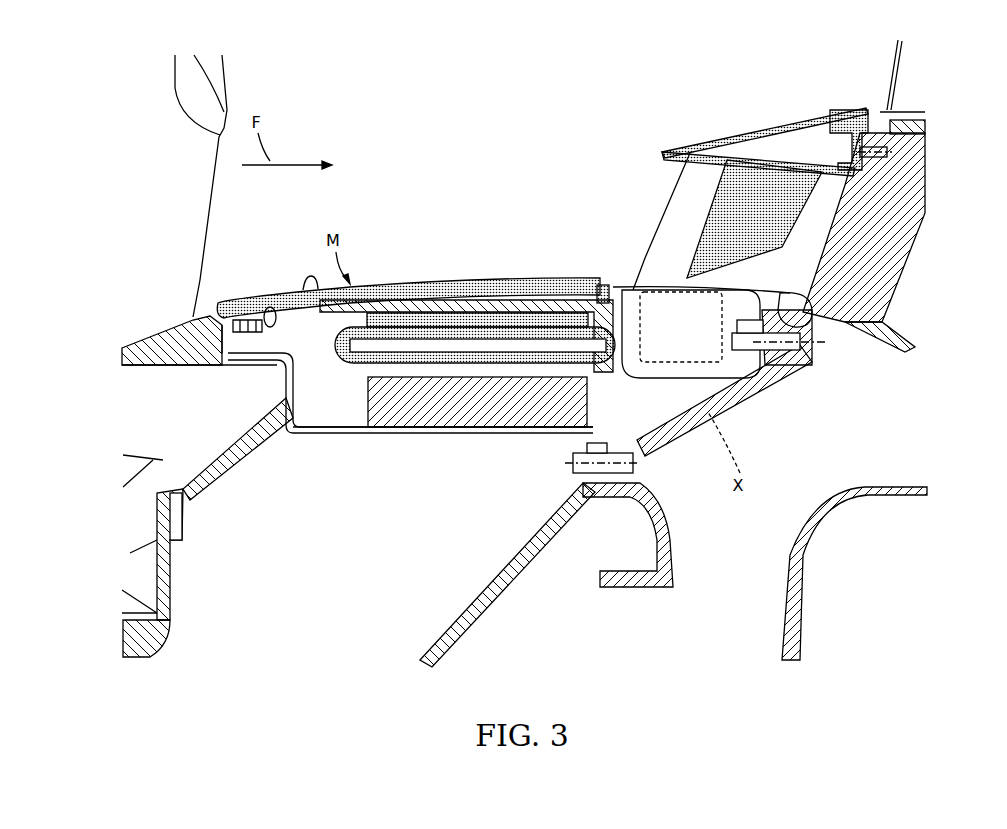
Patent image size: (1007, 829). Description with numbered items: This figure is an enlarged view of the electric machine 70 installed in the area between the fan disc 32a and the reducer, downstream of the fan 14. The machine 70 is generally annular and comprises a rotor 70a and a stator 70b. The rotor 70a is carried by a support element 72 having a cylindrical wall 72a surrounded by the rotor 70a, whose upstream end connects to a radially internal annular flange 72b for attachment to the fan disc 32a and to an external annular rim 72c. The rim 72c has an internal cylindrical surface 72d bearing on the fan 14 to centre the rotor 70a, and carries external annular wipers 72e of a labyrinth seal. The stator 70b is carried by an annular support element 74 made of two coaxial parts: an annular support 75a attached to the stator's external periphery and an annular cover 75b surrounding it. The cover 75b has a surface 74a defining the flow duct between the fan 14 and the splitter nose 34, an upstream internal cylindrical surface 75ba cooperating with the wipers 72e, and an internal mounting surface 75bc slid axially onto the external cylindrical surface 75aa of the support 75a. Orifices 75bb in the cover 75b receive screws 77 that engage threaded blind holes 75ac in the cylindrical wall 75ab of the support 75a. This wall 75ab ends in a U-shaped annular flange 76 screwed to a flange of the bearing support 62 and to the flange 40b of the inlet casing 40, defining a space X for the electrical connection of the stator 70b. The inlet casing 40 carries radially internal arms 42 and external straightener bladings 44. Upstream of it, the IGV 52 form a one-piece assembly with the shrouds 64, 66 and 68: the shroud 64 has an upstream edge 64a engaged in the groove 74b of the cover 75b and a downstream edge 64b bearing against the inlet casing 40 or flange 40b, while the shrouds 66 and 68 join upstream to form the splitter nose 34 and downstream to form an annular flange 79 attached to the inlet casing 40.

The fan 14 is at (114, 350).
The fan disc 32a is at (127, 543).
The splitter nose 34 is at (663, 147).
The inlet casing 40 is at (938, 234).
The flange on the inlet casing 40b is at (795, 370).
The radially internal arms 42 is at (905, 338).
The radially external straightener bladings (OGV) 44 is at (908, 83).
The straightener bladings (IGV) 52 is at (807, 133).
The bearing support 62 is at (747, 397).
The annular shroud 64 is at (676, 290).
The upstream peripheral edge 64a is at (630, 283).
The downstream edge 64b is at (822, 320).
The annular shroud 66 is at (690, 262).
The annular shroud 68 is at (778, 183).
The electric machine 70 is at (278, 258).
The rotor 70a is at (485, 410).
The stator 70b is at (420, 360).
The support element 72 is at (268, 440).
The cylindrical wall 72a is at (468, 434).
The radially internal annular flange 72b is at (130, 617).
The external annular rim 72c is at (262, 418).
The internal cylindrical surface 72d is at (250, 365).
The external annular wipers 72e is at (217, 310).
The annular support element 74 is at (524, 272).
The surface 74a is at (310, 290).
The annular groove 74b is at (622, 283).
The annular support 75a is at (483, 305).
The external cylindrical surface 75aa is at (362, 335).
The cylindrical wall 75ab is at (456, 305).
The blind holes 75ac is at (640, 345).
The annular cover 75b is at (407, 293).
The internal cylindrical surface 75ba is at (265, 293).
The orifices 75bb is at (600, 290).
The internal cylindrical mounting surface 75bc is at (437, 290).
The annular flange 76 is at (682, 325).
The screws 77 is at (603, 283).
The annular flange 79 is at (896, 65).